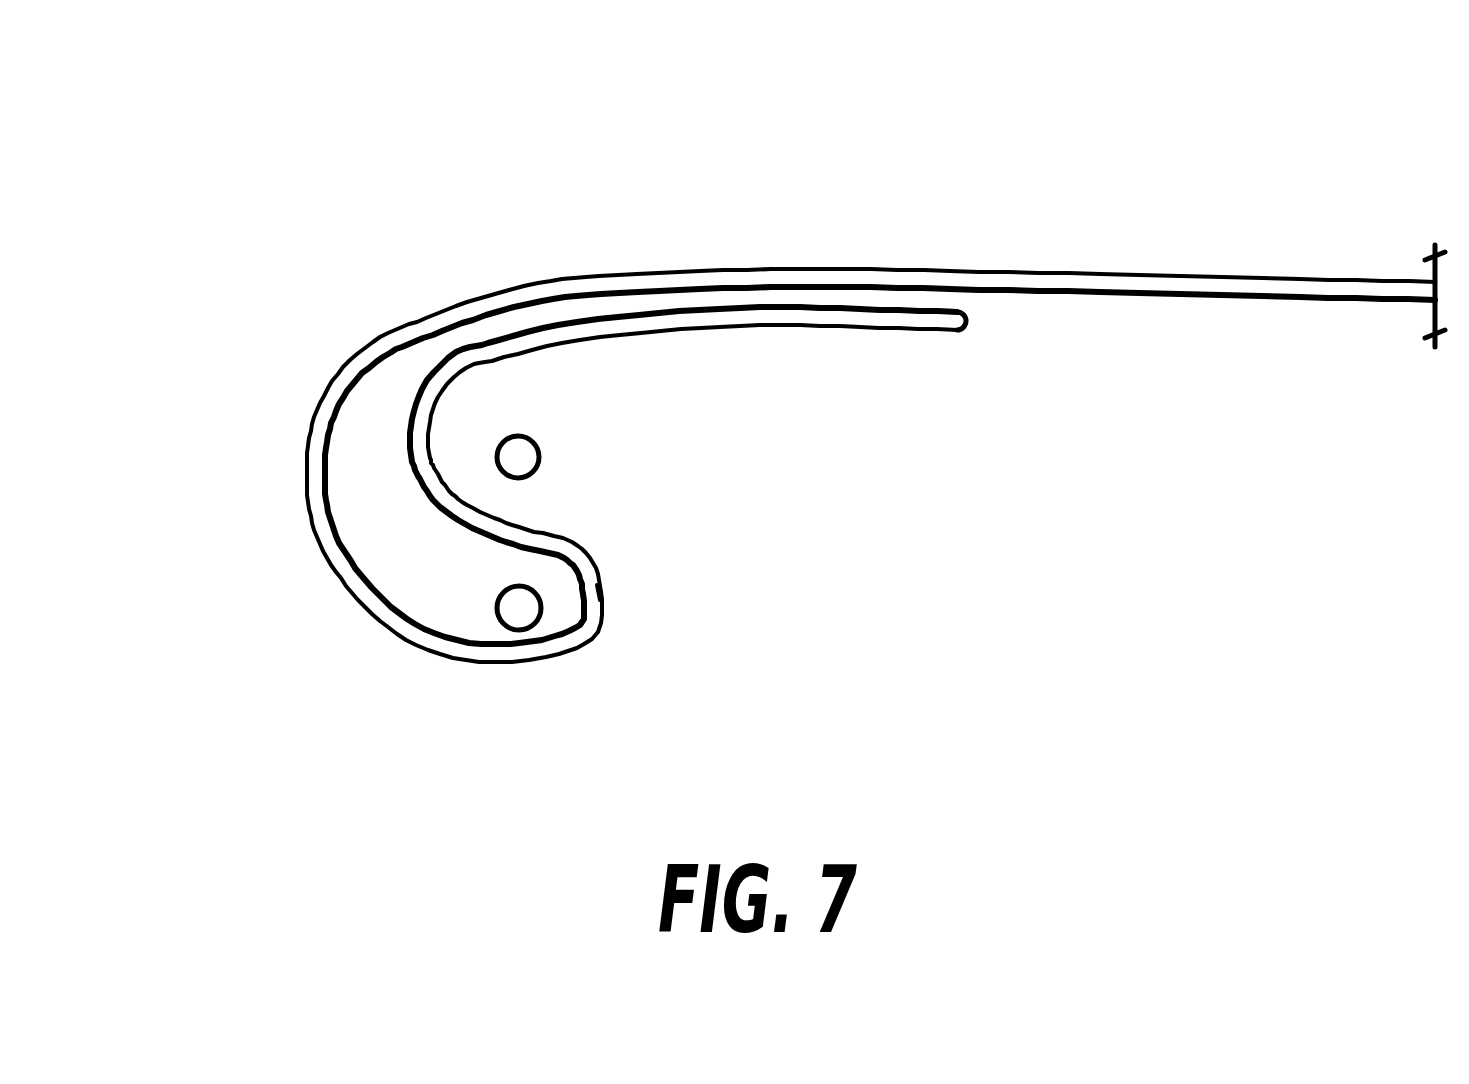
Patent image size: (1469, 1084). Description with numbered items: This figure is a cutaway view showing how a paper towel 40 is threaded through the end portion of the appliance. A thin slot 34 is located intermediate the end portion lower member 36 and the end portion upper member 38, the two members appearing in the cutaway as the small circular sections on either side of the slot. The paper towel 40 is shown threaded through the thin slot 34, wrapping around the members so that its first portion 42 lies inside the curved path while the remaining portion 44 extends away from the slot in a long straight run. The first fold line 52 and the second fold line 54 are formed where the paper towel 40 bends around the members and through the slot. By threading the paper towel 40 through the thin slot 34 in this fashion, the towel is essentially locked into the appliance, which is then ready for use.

The thin slot 34 is at (873, 383).
The end portion lower member 36 is at (520, 612).
The end portion upper member 38 is at (520, 457).
The paper towel 40 is at (391, 333).
The first portion 42 is at (745, 327).
The remaining portion 44 is at (1193, 277).
The first fold line 52 is at (605, 593).
The second fold line 54 is at (308, 476).